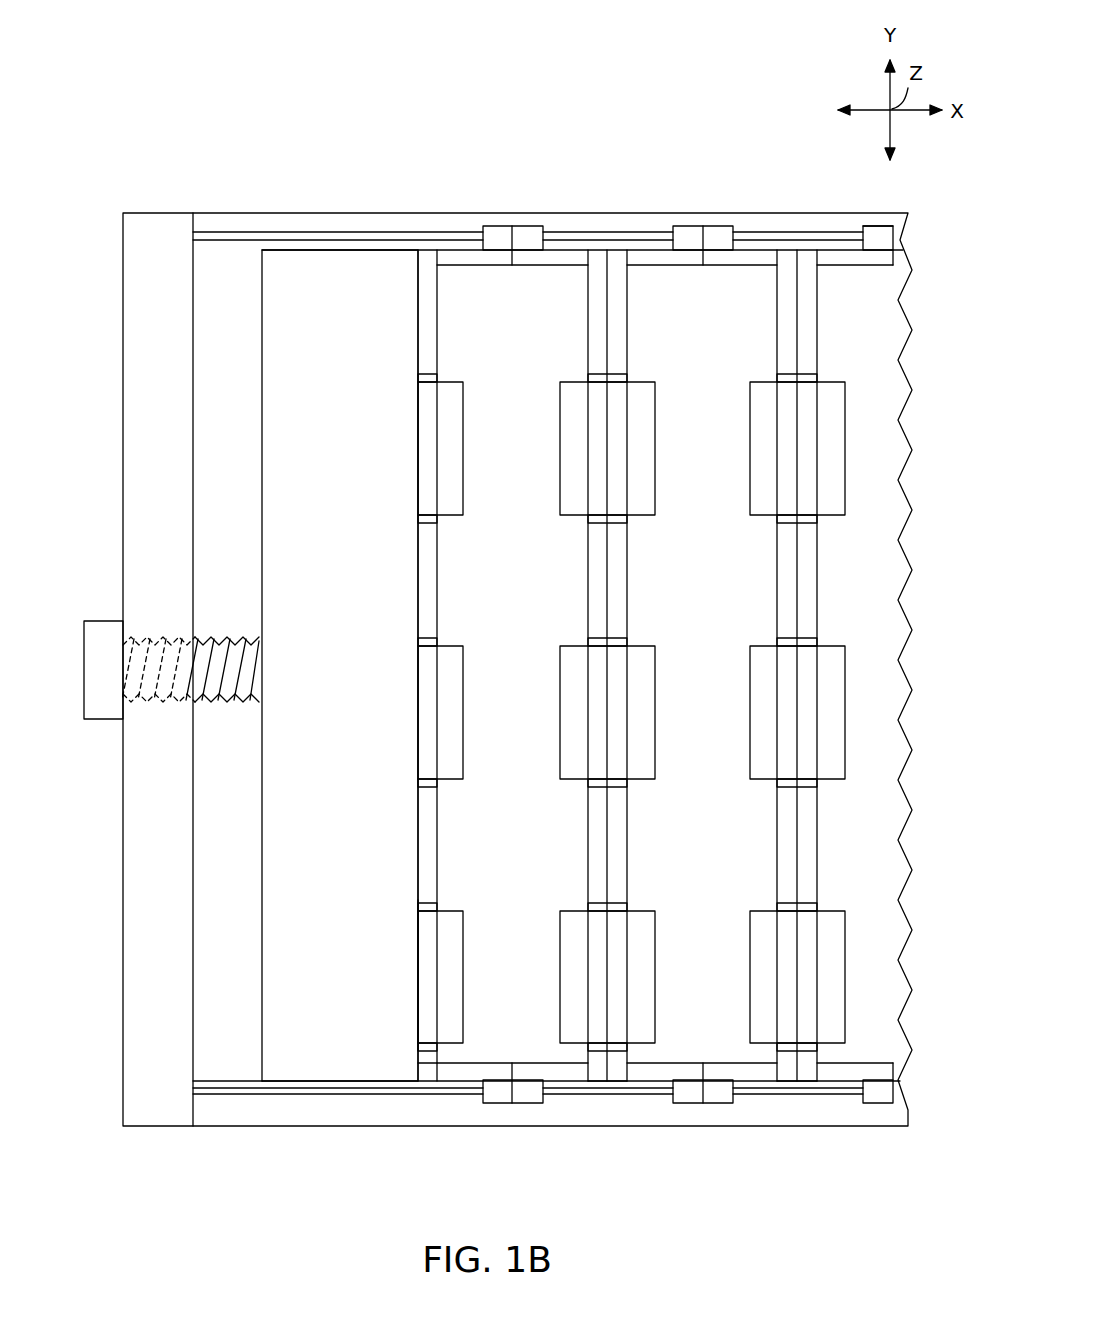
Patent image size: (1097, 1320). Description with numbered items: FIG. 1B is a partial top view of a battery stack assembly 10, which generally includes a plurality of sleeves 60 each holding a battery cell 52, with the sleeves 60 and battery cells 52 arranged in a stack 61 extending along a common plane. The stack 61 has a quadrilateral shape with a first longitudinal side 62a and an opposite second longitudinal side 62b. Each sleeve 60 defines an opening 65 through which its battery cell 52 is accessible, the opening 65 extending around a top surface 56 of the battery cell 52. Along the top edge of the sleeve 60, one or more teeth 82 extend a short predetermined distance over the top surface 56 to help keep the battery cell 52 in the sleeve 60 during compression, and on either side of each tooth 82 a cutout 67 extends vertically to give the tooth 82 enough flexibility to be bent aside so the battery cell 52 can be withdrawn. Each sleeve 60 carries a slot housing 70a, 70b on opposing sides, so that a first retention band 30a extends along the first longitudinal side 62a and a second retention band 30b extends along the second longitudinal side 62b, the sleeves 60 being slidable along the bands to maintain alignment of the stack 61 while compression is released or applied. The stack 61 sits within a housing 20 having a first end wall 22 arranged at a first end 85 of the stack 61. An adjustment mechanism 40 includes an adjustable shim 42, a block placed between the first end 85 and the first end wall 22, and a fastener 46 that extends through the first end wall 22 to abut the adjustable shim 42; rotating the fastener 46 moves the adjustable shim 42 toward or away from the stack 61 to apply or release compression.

The battery stack assembly 10 is at (150, 146).
The housing 20 is at (112, 205).
The first end wall 22 is at (123, 352).
The first retention band 30a is at (305, 1094).
The second retention band 30b is at (328, 232).
The adjustment mechanism 40 is at (82, 668).
The adjustable shim 42 is at (352, 254).
The fastener 46 is at (100, 621).
The battery cell 52 is at (558, 260).
The top surface 56 is at (524, 336).
The sleeve 60 is at (435, 1077).
The stack 61 is at (230, 1062).
The first longitudinal side 62a is at (818, 1116).
The second longitudinal side 62b is at (749, 148).
The opening 65 is at (458, 238).
The cutout 67 is at (426, 375).
The slot housing 70a is at (505, 1108).
The slot housing 70b is at (513, 222).
The tooth 82 is at (468, 440).
The first end 85 is at (402, 972).